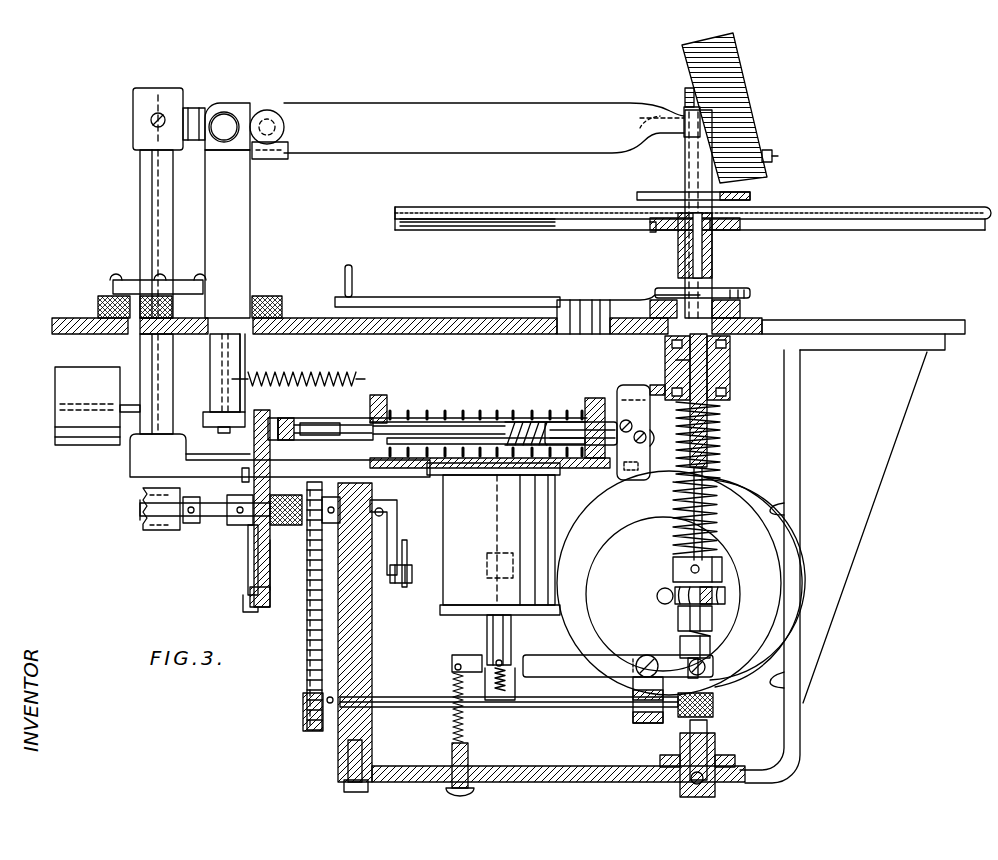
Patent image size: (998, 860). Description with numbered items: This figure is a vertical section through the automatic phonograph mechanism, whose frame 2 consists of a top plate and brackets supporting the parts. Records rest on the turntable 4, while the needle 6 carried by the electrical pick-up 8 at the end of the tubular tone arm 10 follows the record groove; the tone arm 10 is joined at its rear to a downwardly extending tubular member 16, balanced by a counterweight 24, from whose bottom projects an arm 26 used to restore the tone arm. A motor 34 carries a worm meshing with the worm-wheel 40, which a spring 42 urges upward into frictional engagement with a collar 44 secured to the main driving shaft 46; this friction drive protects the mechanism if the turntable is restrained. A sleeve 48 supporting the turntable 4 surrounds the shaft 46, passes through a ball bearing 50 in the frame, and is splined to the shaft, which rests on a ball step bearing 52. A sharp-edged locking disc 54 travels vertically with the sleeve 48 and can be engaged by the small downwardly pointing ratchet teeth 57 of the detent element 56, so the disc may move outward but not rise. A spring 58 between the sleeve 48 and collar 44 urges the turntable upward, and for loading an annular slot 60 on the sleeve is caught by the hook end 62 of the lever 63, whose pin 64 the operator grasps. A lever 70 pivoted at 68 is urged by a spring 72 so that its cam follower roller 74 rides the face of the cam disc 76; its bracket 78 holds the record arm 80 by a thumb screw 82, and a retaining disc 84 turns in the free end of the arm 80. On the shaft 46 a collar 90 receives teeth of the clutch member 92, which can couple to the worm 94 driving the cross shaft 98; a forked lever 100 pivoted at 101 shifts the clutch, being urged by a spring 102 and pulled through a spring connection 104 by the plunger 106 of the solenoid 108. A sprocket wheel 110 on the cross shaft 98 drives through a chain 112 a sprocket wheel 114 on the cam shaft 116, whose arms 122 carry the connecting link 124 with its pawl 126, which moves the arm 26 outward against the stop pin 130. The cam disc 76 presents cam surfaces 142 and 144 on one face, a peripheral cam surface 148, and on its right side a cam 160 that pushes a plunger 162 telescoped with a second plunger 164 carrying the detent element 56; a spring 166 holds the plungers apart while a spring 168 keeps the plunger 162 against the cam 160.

The frame 2 is at (832, 323).
The turntable 4 is at (828, 208).
The needle 6 is at (740, 187).
The pick-up 8 is at (748, 97).
The tone arm 10 is at (660, 108).
The tubular member 16 is at (140, 192).
The counterweight 24 is at (55, 387).
The arm 26 is at (330, 477).
The motor 34 is at (733, 505).
The worm-wheel 40 is at (718, 577).
The spring 42 is at (713, 634).
The collar 44 is at (675, 567).
The main driving shaft 46 is at (690, 256).
The sleeve 48 is at (712, 260).
The ball bearing 50 is at (752, 318).
The ball step bearing 52 is at (660, 768).
The locking disc 54 is at (730, 386).
The detent element 56 is at (618, 396).
The ratchet teeth 57 is at (663, 443).
The spring 58 is at (720, 420).
The annular slot 60 is at (650, 224).
The hook end 62 is at (755, 293).
The lever 63 is at (470, 298).
The pin 64 is at (354, 282).
The pivot 68 is at (229, 118).
The lever 70 is at (250, 220).
The spring 72 is at (315, 372).
The cam follower roller 74 is at (211, 413).
The cam disc 76 is at (270, 420).
The bracket 78 is at (286, 160).
The record arm 80 is at (397, 103).
The thumb screw 82 is at (279, 114).
The retaining disc 84 is at (640, 194).
The collar 90 is at (683, 640).
The clutch member 92 is at (712, 662).
The worm 94 is at (713, 704).
The cross shaft 98 is at (392, 706).
The lever 100 is at (452, 662).
The pivot 101 is at (640, 656).
The spring 102 is at (464, 718).
The spring connection 104 is at (505, 690).
The plunger 106 is at (490, 636).
The solenoid 108 is at (527, 510).
The sprocket wheel 110 is at (305, 712).
The chain 112 is at (310, 630).
The sprocket wheel 114 is at (311, 532).
The cam shaft 116 is at (212, 522).
The arms 122 is at (398, 522).
The connecting link 124 is at (400, 585).
The pawl 126 is at (408, 547).
The stop pin 130 is at (246, 481).
The cam surface 142 is at (250, 600).
The cam surface 144 is at (250, 545).
The cam surface 148 is at (258, 612).
The cam 160 is at (273, 580).
The plunger 162 is at (337, 424).
The plunger 164 is at (562, 422).
The spring 166 is at (508, 420).
The spring 168 is at (421, 413).